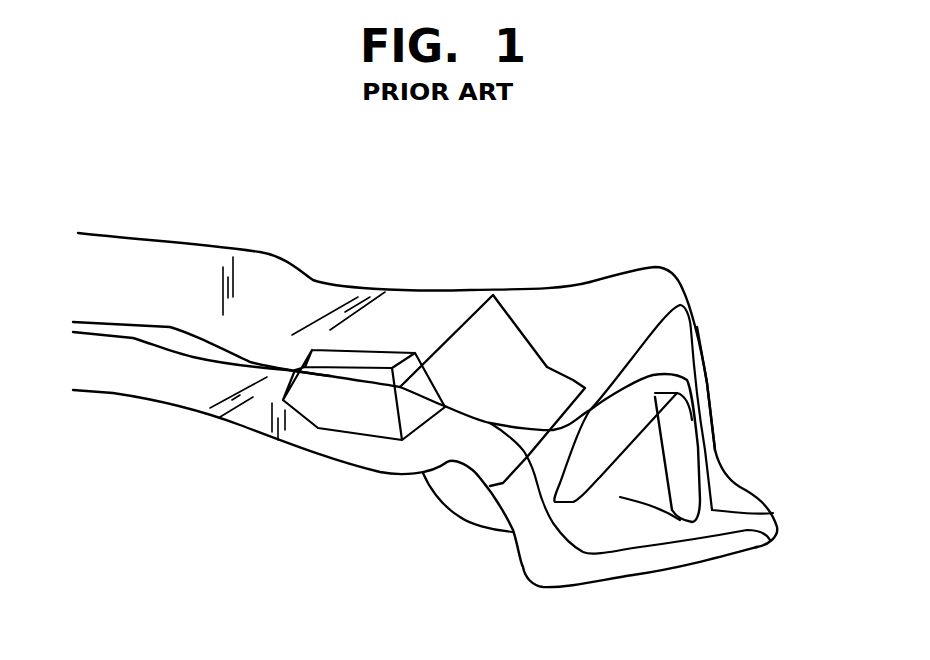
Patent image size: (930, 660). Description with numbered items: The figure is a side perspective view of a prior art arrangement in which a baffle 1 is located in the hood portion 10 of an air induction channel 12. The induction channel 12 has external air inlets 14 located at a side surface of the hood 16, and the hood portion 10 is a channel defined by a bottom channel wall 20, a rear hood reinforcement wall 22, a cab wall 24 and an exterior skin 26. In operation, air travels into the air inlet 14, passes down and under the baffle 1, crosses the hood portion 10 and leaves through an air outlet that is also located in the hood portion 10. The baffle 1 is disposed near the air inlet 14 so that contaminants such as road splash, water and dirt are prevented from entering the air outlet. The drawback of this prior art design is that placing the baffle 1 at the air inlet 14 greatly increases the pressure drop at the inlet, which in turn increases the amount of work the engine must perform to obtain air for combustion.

The baffle 1 is at (472, 328).
The hood portion 10 is at (262, 283).
The air induction channel 12 is at (693, 257).
The external air inlets 14 is at (693, 325).
The hood 16 is at (703, 360).
The bottom channel wall 20 is at (218, 383).
The rear hood reinforcement wall 22 is at (260, 420).
The cab wall 24 is at (195, 285).
The exterior skin 26 is at (300, 302).